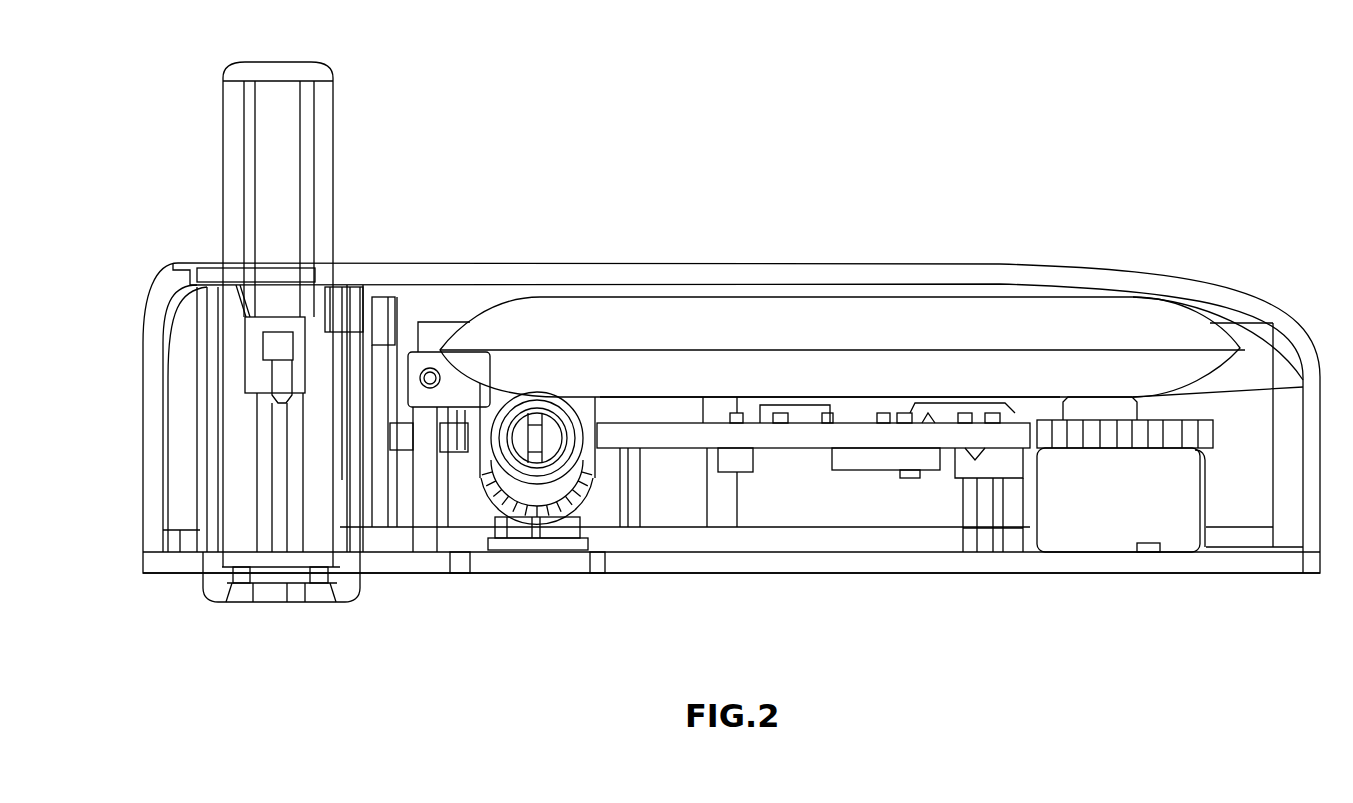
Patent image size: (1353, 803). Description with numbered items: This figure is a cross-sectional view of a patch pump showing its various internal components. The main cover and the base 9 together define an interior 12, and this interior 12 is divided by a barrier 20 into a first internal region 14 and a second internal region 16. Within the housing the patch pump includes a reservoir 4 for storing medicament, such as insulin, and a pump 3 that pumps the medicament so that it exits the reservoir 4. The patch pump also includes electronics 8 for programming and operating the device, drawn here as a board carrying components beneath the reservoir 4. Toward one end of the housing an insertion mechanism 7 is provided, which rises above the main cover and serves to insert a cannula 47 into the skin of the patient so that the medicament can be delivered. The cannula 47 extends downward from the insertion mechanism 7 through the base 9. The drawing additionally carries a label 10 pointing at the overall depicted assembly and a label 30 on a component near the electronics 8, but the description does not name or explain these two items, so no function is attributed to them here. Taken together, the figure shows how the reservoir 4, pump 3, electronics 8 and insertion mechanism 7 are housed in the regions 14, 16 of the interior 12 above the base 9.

The imaging device 10 is at (542, 180).
The insertion mechanism 7 is at (333, 125).
The reservoir 4 is at (745, 350).
The first internal region 14 is at (1218, 373).
The second internal region 16 is at (185, 500).
The cannula 47 is at (278, 510).
The barrier 20 is at (362, 478).
The pump 3 is at (545, 525).
The interior 12 is at (670, 503).
The electronics 8 is at (793, 440).
The connector 30 is at (877, 473).
The base 9 is at (1130, 573).